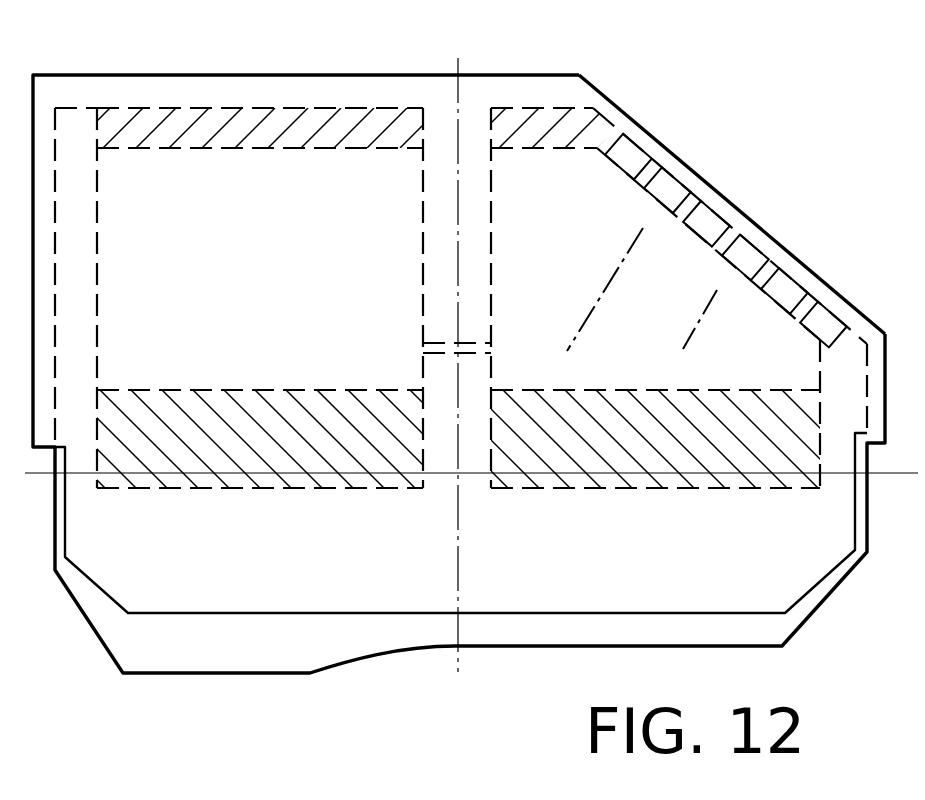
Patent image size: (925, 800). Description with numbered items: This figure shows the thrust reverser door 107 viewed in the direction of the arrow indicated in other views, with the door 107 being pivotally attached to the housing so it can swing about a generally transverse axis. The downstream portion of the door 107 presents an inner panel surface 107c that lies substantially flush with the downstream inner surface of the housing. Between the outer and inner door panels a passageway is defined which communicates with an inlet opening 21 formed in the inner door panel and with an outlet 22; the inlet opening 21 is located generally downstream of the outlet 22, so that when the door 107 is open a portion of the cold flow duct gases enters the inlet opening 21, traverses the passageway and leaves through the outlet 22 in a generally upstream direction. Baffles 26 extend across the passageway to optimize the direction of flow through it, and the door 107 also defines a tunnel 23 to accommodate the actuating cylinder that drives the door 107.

The thrust reverser door 107 is at (297, 92).
The inner panel surface 107c is at (748, 212).
The tunnel 23 is at (472, 188).
The outlet 22 is at (647, 175).
The baffles 26 is at (710, 307).
The inlet opening 21 is at (625, 448).